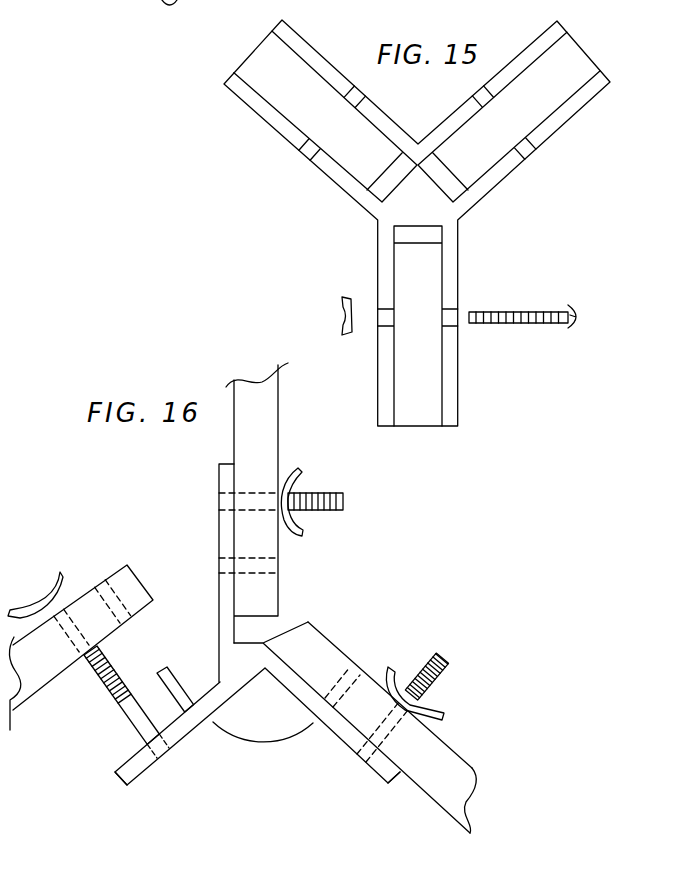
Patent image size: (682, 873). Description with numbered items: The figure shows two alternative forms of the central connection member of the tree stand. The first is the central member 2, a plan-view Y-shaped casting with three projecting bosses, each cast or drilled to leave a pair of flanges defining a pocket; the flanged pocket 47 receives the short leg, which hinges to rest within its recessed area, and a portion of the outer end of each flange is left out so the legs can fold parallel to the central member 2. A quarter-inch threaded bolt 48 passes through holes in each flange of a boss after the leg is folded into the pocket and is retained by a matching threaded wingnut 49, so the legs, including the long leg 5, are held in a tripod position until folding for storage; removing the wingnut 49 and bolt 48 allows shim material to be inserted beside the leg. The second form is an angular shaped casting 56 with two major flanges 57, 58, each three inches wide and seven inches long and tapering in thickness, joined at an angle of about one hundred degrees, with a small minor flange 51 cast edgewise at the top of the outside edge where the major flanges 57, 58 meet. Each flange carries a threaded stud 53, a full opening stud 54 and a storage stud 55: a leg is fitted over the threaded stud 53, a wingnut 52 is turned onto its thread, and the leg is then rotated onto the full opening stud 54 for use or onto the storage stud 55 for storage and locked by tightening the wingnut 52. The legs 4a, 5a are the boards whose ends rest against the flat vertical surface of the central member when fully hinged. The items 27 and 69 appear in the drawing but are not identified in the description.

In FIG. 15, the central member 2 is at (346, 229).
In FIG. 16, the central member 2 is at (253, 655).
In FIG. 15, the flanged pocket 47 is at (458, 400).
In FIG. 15, the threaded bolt 48 is at (543, 310).
In FIG. 15, the wingnut 49 is at (343, 297).
In FIG. 15, the long leg 5 is at (675, 133).
In FIG. 15, the ring 27 is at (175, 8).
In FIG. 15, the fastener 69 is at (202, 0).
In FIG. 16, the leg 4a is at (278, 393).
In FIG. 16, the leg 5a is at (425, 797).
In FIG. 16, the minor flange 51 is at (218, 530).
In FIG. 16, the wingnut 52 is at (62, 572).
In FIG. 16, the threaded stud 53 is at (115, 677).
In FIG. 16, the full opening stud 54 is at (180, 673).
In FIG. 16, the storage stud 55 is at (127, 728).
In FIG. 16, the angular shaped casting 56 is at (263, 754).
In FIG. 16, the major flange 57 is at (140, 777).
In FIG. 16, the major flange 58 is at (380, 778).